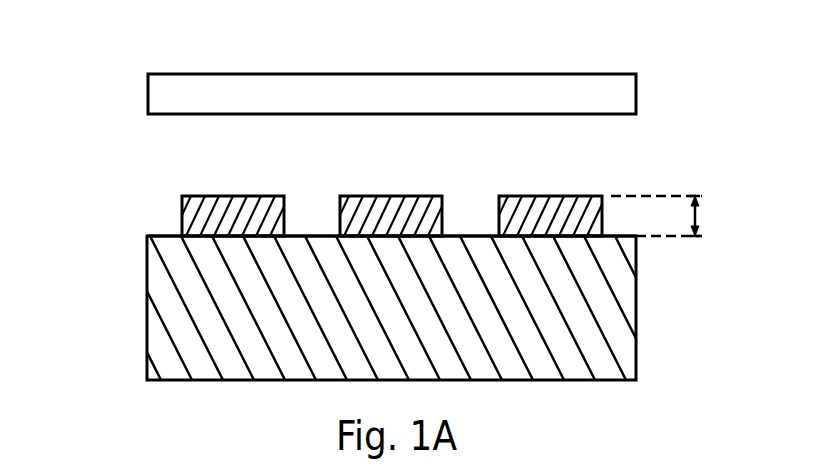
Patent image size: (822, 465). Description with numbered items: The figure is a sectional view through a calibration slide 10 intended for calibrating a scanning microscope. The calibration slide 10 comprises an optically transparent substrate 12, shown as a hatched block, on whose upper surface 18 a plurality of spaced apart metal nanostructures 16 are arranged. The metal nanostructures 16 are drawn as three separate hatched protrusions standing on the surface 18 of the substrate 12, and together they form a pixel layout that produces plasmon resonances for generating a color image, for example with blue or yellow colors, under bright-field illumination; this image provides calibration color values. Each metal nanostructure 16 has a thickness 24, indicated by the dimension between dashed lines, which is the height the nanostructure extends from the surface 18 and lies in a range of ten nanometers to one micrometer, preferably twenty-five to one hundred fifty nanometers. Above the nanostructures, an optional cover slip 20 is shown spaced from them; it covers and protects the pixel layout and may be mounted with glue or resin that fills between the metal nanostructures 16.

The calibration slide 10 is at (727, 147).
The substrate 12 is at (636, 317).
The metal nanostructures 16 is at (220, 196).
The surface of the substrate 18 is at (158, 236).
The cover slip 20 is at (148, 89).
The thickness 24 is at (700, 217).